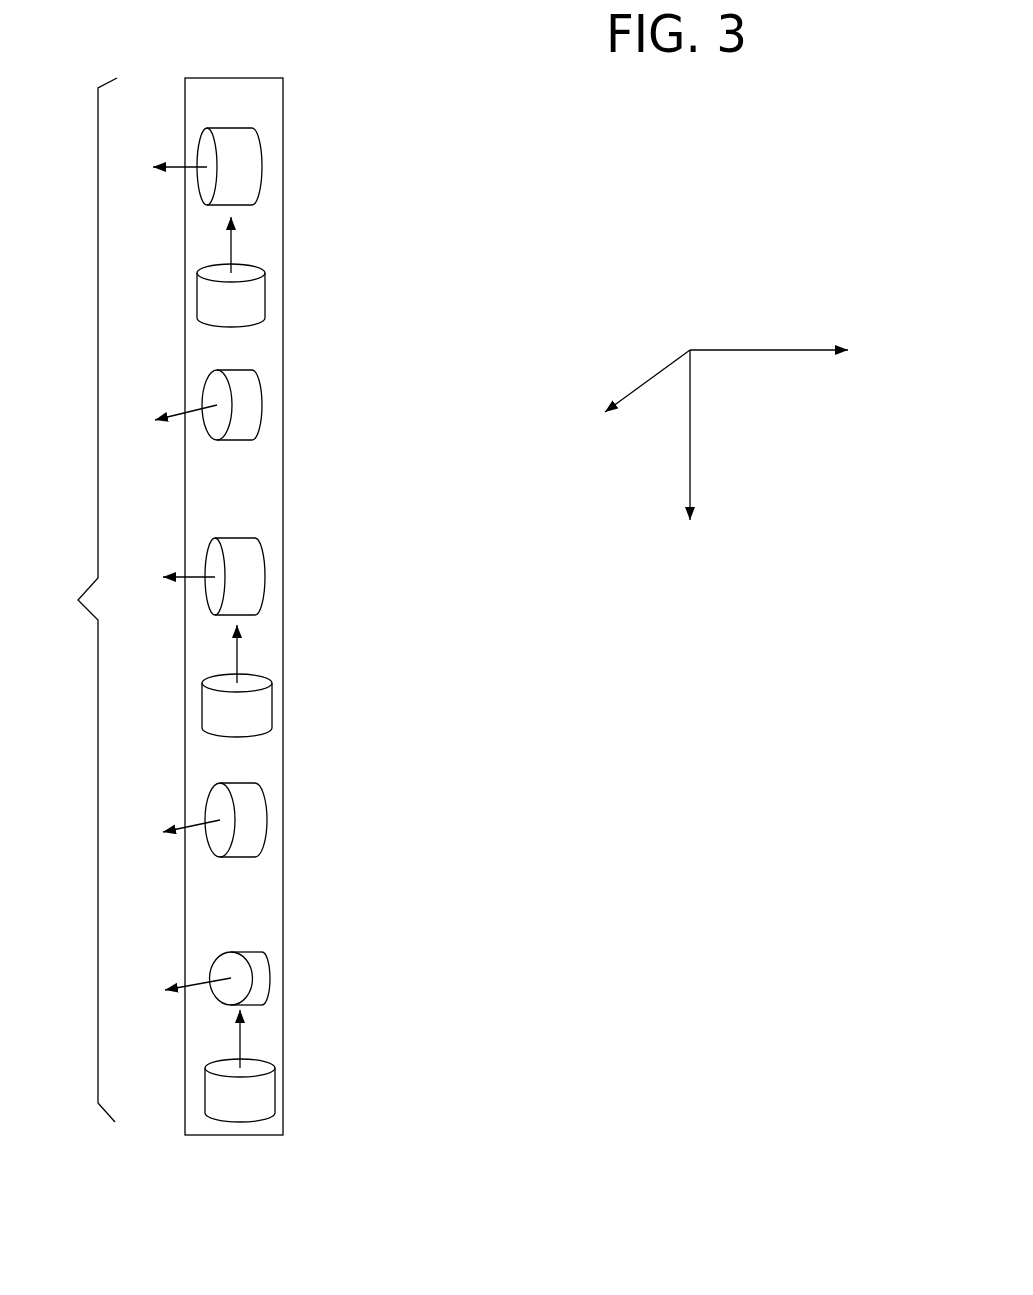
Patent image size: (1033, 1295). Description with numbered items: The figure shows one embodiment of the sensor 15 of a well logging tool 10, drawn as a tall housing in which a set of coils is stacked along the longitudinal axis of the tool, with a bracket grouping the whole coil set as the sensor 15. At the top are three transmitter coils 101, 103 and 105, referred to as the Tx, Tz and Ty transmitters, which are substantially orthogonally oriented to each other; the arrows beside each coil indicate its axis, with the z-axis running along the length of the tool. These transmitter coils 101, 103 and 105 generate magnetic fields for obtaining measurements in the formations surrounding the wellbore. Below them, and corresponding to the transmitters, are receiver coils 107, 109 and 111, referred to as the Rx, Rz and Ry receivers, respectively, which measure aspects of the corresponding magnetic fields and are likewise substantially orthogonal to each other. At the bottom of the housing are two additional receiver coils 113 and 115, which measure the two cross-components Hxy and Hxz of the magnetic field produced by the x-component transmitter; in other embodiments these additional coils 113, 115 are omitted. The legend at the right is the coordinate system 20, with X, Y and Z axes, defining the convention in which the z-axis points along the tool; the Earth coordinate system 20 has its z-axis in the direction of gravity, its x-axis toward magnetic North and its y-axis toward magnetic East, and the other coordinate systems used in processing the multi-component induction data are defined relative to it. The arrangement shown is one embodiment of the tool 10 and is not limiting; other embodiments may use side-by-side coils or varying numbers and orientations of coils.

The well logging tool 10 is at (255, 1123).
The sensor 15 is at (71, 600).
The Earth coordinate system 20 is at (690, 423).
The transmitter coil Tx 101 is at (313, 140).
The transmitter coil Tz 103 is at (322, 278).
The transmitter coil Ty 105 is at (322, 387).
The receiver coil Rx 107 is at (332, 577).
The receiver coil Rz 109 is at (332, 695).
The receiver coil Ry 111 is at (333, 813).
The additional receiver coil Rxy 113 is at (350, 968).
The additional receiver coil Rxz 115 is at (350, 1092).